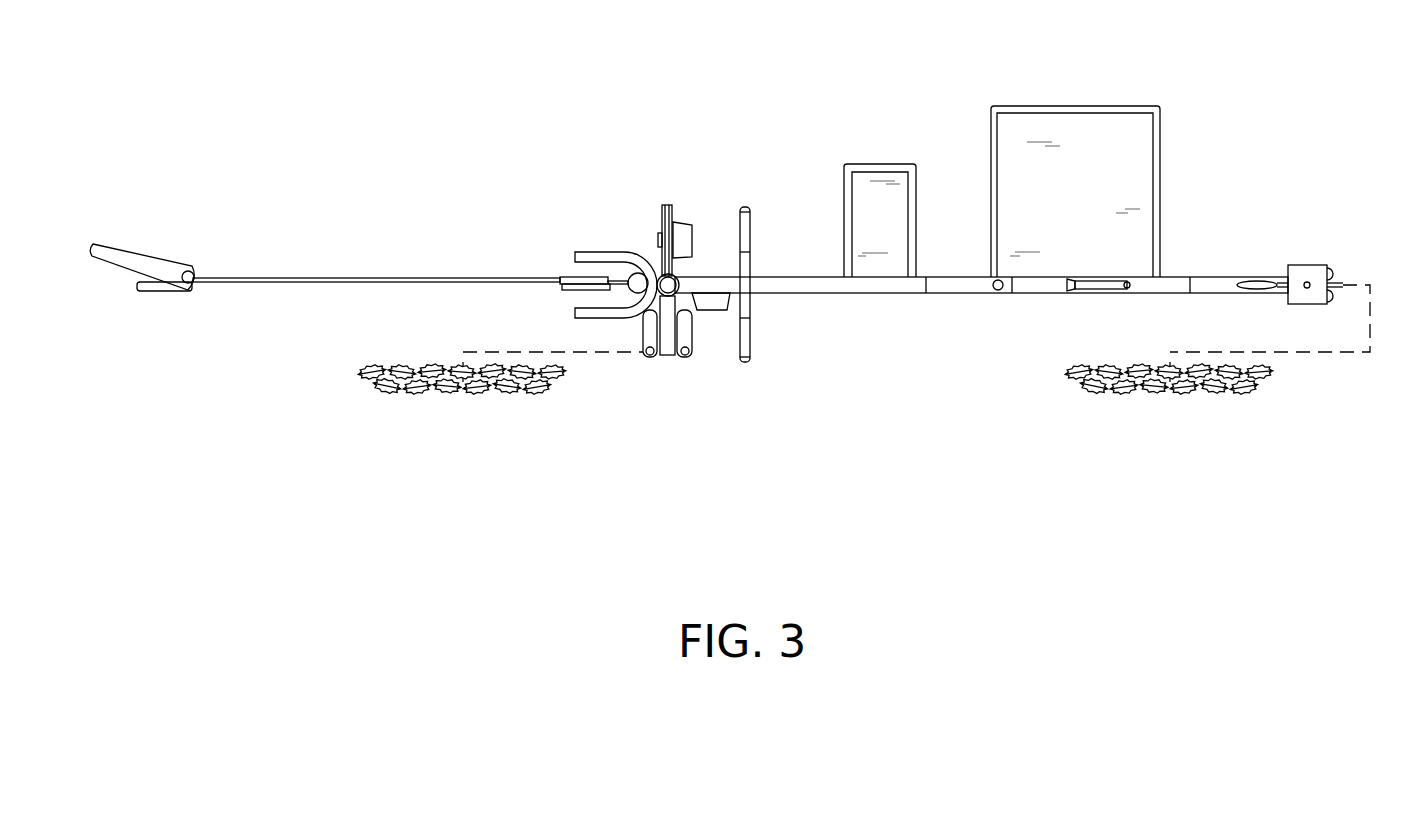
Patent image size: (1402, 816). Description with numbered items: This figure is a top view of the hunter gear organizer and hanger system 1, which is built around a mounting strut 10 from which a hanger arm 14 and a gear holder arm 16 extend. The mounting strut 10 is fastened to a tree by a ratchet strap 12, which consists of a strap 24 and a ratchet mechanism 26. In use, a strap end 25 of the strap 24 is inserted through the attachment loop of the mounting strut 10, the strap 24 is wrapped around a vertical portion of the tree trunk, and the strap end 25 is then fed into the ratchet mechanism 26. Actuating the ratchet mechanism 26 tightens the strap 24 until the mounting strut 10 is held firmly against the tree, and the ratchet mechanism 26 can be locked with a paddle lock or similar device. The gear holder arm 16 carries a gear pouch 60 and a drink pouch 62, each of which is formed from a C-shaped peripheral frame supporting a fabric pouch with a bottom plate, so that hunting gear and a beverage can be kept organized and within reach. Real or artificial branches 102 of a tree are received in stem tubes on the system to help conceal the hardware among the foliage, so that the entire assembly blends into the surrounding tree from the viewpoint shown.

The hunter gear organizer and hanger system 1 is at (705, 127).
The mounting strut 10 is at (598, 245).
The ratchet strap 12 is at (302, 303).
The hanger arm 14 is at (1009, 254).
The gear holder arm 16 is at (1187, 262).
The strap 24 is at (328, 278).
The strap end 25 is at (565, 280).
The ratchet mechanism 26 is at (143, 253).
The gear pouch 60 is at (1107, 87).
The drink pouch 62 is at (870, 142).
The branch 102 is at (435, 387).